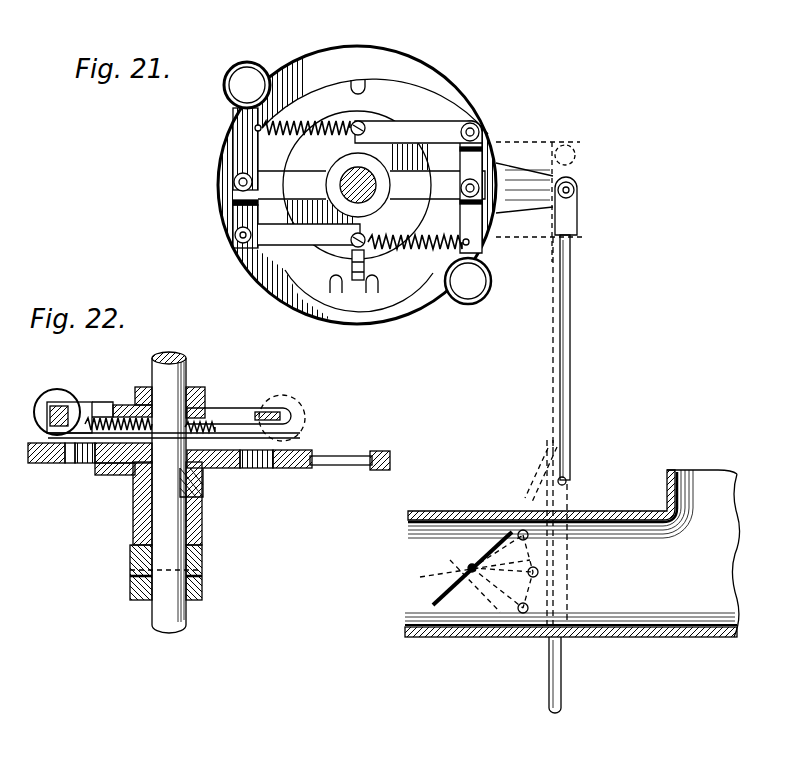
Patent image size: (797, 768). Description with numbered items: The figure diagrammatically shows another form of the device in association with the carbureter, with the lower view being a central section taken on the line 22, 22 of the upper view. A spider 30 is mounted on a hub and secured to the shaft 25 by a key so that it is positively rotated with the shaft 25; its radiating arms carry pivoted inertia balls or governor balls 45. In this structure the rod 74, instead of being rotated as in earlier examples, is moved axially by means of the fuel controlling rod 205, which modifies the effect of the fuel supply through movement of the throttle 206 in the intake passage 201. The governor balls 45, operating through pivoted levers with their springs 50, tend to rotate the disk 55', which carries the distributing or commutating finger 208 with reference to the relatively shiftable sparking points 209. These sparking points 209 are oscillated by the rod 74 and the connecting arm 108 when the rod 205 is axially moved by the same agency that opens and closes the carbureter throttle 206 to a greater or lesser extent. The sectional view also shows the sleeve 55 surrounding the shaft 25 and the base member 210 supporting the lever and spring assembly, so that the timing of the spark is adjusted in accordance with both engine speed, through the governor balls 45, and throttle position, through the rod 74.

In FIG. 21, the section line 22 is at (172, 197).
In FIG. 21, the shaft 25 is at (363, 178).
In FIG. 22, the shaft 25 is at (190, 365).
In FIG. 22, the spider 30 is at (127, 430).
In FIG. 21, the inertia ball or weight 45 is at (250, 60).
In FIG. 22, the inertia ball or weight 45 is at (57, 389).
In FIG. 21, the spring 50 is at (306, 120).
In FIG. 22, the spring 50 is at (217, 420).
In FIG. 21, the sleeve 55 is at (428, 101).
In FIG. 22, the sleeve 55 is at (144, 531).
In FIG. 22, the disk 55' is at (217, 487).
In FIG. 21, the rod 74 is at (570, 361).
In FIG. 21, the connecting arm 108 is at (545, 182).
In FIG. 22, the connecting arm 108 is at (352, 447).
In FIG. 21, the pipe 201 is at (722, 506).
In FIG. 21, the fuel controlling rod 205 is at (562, 668).
In FIG. 21, the throttle 206 is at (507, 511).
In FIG. 21, the distributing or commutating finger 208 is at (357, 267).
In FIG. 21, the sparking points 209 is at (365, 80).
In FIG. 22, the sparking points 209 is at (73, 463).
In FIG. 21, the lower arm 210 is at (483, 248).
In FIG. 22, the lower arm 210 is at (57, 463).